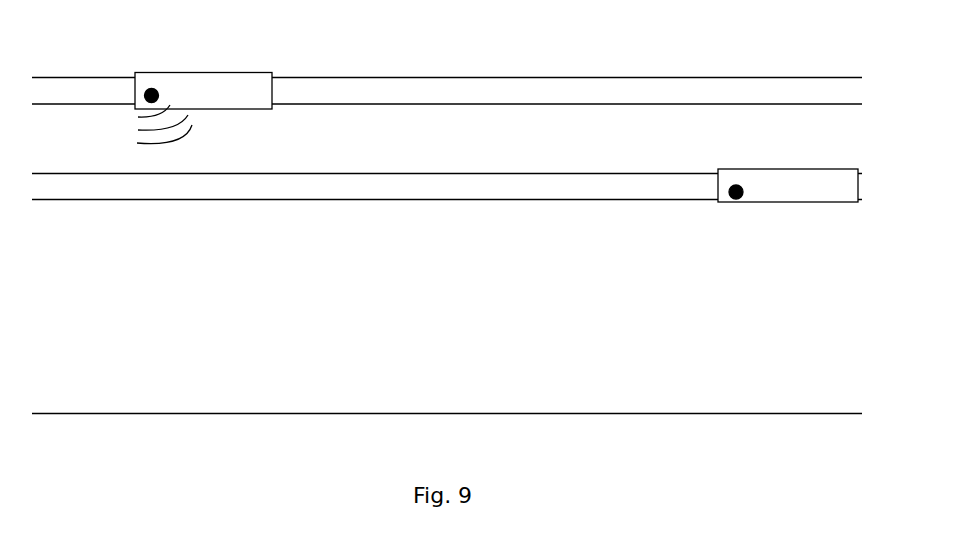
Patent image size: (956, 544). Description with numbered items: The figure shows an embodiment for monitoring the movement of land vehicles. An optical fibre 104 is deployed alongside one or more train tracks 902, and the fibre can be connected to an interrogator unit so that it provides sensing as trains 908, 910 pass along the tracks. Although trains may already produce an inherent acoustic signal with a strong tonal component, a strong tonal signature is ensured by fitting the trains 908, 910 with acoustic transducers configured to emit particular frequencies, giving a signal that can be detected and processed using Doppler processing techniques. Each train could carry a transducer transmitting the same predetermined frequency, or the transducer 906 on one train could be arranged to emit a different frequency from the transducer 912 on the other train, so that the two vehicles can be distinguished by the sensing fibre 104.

The train tracks 902 is at (493, 104).
The transducer 906 is at (146, 91).
The train 908 is at (227, 80).
The train 910 is at (772, 203).
The transducer 912 is at (740, 187).
The optical fibre 104 is at (722, 414).